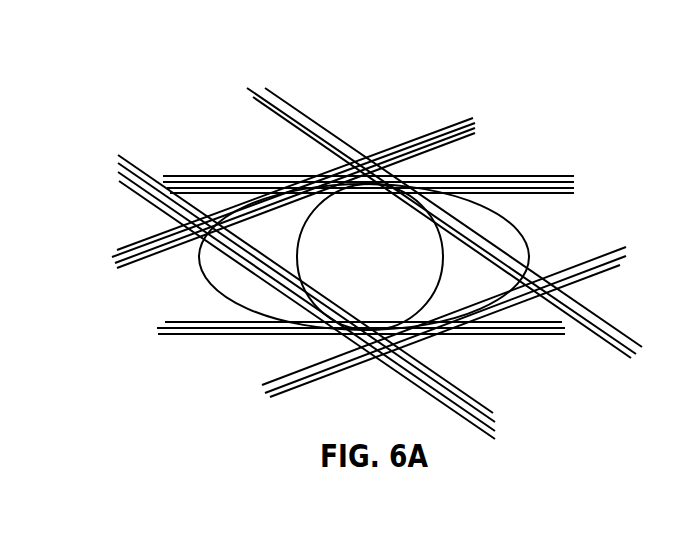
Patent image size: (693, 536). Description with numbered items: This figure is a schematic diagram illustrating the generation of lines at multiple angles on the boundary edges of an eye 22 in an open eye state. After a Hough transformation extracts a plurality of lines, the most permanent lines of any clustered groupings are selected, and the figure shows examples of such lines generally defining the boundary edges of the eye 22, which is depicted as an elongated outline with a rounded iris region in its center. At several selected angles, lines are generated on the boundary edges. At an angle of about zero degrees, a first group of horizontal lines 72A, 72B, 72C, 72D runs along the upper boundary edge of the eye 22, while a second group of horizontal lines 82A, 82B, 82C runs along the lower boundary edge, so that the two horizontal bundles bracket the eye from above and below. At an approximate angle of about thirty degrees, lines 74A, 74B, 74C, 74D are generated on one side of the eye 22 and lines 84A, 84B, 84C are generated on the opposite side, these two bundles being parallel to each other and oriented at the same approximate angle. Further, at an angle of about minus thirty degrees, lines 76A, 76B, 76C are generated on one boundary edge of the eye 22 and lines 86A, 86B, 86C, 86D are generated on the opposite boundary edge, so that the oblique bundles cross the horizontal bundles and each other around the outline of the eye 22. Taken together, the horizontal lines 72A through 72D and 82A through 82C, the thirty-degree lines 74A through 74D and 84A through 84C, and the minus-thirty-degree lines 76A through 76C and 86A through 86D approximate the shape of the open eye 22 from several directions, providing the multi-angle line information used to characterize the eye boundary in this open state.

The eye 22 is at (217, 291).
The line 72A is at (515, 174).
The line 72B is at (540, 179).
The line 72C is at (560, 191).
The line 72D is at (522, 196).
The line 74A is at (424, 136).
The line 74B is at (446, 128).
The line 74C is at (472, 117).
The line 74D is at (472, 140).
The line 76A is at (262, 104).
The line 76B is at (254, 92).
The line 76C is at (279, 95).
The line 82A is at (547, 336).
The line 82B is at (527, 335).
The line 82C is at (485, 336).
The line 84A is at (603, 252).
The line 84B is at (622, 260).
The line 84C is at (600, 272).
The line 86A is at (133, 161).
The line 86B is at (128, 169).
The line 86C is at (129, 180).
The line 86D is at (140, 196).